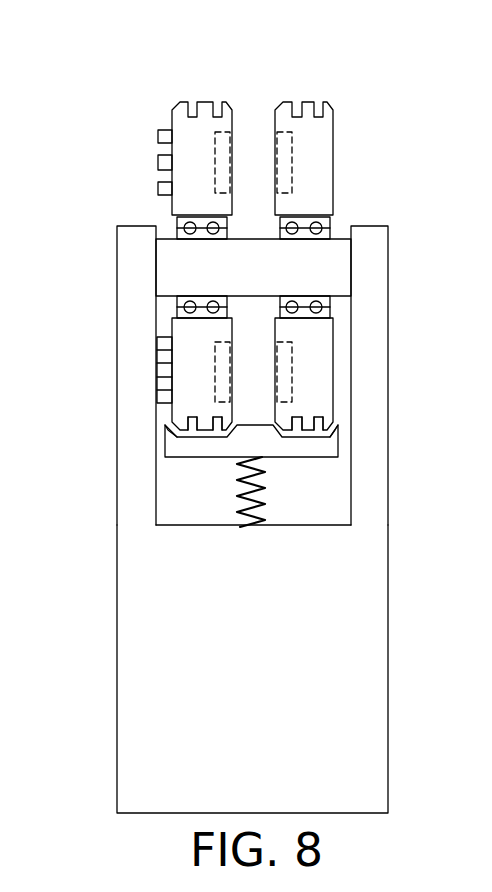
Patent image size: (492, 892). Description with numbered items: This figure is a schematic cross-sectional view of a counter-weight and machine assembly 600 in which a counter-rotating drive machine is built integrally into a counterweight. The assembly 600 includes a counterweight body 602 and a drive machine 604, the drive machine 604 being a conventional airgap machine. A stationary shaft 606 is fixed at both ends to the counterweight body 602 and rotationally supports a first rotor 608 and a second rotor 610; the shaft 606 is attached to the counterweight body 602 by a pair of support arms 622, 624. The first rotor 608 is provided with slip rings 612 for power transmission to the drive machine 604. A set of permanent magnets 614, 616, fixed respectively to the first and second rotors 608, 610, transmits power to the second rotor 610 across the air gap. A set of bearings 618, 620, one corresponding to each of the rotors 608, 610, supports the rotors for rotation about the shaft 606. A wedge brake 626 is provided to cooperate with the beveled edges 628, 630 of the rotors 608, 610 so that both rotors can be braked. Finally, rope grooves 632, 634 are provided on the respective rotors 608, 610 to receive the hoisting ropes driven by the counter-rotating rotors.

The counter-weight and machine assembly 600 is at (146, 73).
The counterweight body 602 is at (350, 635).
The drive machine 604 is at (352, 198).
The stationary shaft 606 is at (320, 264).
The first rotor 608 is at (183, 127).
The second rotor 610 is at (325, 138).
The slip rings 612 is at (158, 137).
The permanent magnet 614 is at (225, 152).
The permanent magnet 616 is at (277, 155).
The bearing 618 is at (204, 241).
The bearing 620 is at (304, 241).
The support arm 622 is at (135, 338).
The support arm 624 is at (373, 348).
The wedge brake 626 is at (327, 448).
The beveled edge 628 is at (168, 428).
The beveled edge 630 is at (338, 428).
The rope groove 632 is at (208, 430).
The rope groove 634 is at (318, 428).